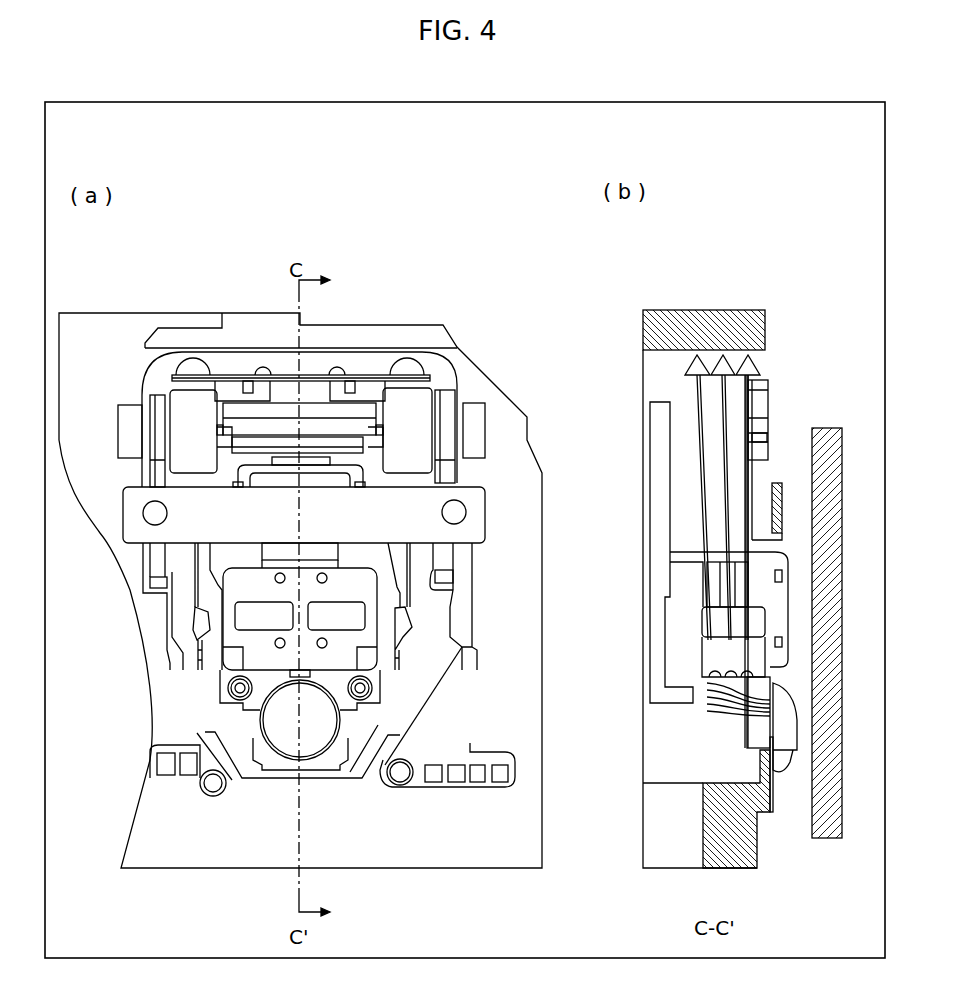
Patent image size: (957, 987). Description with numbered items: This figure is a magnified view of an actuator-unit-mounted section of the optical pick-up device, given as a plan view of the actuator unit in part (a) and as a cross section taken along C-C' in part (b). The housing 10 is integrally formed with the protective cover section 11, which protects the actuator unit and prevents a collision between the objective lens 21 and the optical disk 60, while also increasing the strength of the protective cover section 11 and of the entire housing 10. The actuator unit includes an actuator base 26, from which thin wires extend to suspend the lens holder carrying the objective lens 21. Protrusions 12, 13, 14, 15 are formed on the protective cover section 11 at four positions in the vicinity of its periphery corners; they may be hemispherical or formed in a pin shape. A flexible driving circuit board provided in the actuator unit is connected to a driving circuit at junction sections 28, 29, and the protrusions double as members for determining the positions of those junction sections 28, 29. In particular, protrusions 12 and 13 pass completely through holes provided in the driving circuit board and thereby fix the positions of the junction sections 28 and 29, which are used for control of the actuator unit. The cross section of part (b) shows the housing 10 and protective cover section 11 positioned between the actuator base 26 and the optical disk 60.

The housing 10 is at (702, 322).
The protective cover section 11 is at (470, 538).
The protrusion 12 is at (200, 787).
The protrusion 13 is at (400, 786).
The protrusion 14 is at (145, 515).
The protrusion 15 is at (460, 512).
The objective lens 21 is at (285, 732).
The actuator base 26 is at (655, 458).
The junction section 28 is at (465, 755).
The junction section 29 is at (175, 746).
The optical disk 60 is at (830, 827).